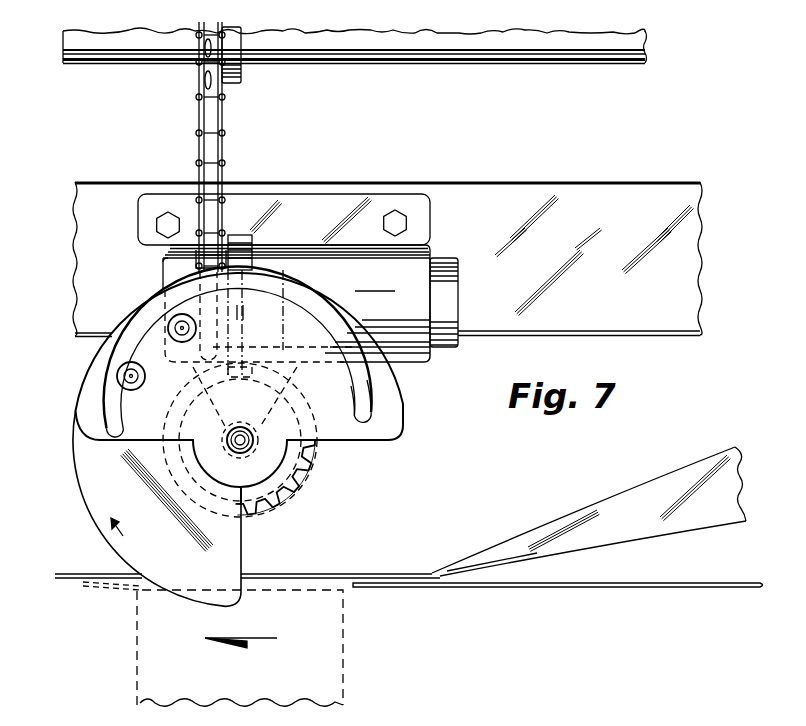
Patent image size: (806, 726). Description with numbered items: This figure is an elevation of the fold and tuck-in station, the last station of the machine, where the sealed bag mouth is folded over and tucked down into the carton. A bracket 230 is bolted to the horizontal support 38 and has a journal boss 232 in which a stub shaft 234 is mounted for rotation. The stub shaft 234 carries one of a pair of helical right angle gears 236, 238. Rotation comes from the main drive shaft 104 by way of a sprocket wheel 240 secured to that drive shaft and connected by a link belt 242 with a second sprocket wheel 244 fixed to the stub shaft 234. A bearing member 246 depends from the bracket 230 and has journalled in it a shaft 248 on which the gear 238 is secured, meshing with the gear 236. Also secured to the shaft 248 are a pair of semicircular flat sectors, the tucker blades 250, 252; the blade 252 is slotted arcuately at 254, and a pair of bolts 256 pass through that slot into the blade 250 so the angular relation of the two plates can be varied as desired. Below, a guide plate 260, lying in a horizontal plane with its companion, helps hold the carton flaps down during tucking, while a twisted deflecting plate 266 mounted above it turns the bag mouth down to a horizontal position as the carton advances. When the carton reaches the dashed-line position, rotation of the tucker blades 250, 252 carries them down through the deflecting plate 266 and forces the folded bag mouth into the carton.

The horizontal support 38 is at (493, 192).
The main drive shaft 104 is at (463, 62).
The bracket 230 is at (143, 217).
The journal boss 232 is at (296, 303).
The stub shaft 234 is at (448, 305).
The helical right angle gear 236 is at (250, 250).
The helical right angle gear 238 is at (313, 460).
The sprocket wheel 240 is at (241, 78).
The link belt 242 is at (198, 120).
The sprocket wheel 244 is at (203, 252).
The bearing member 246 is at (298, 370).
The shaft 248 is at (258, 408).
The tucker blade 250 is at (232, 558).
The tucker blade 252 is at (393, 410).
The arcuate slot 254 is at (352, 380).
The bolts 256 is at (155, 327).
The guide plate 260 is at (626, 587).
The twisted deflecting plate 266 is at (639, 490).